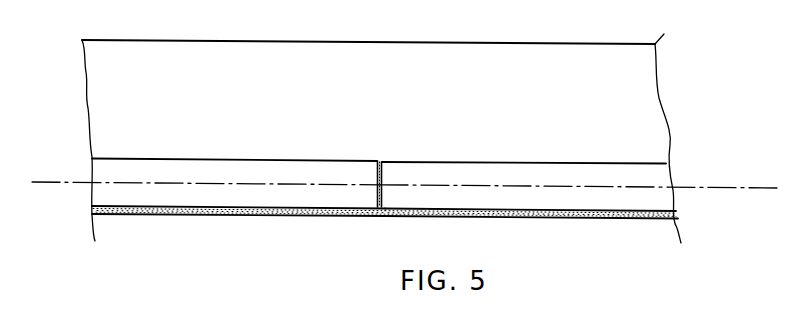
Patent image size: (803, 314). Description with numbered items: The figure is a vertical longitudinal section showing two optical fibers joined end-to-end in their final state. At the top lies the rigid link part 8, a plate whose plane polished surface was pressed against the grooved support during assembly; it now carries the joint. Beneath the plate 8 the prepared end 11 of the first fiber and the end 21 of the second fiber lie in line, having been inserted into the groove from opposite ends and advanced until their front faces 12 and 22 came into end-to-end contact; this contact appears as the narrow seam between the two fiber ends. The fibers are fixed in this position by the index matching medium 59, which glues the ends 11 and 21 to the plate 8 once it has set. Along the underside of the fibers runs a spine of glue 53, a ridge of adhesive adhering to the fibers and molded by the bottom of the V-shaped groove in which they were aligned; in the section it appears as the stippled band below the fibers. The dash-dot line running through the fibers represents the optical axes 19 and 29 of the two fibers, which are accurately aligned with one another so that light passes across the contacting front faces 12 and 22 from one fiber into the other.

The rigid link part 8 is at (580, 70).
The optical axis 19 is at (48, 182).
The optical axis 29 is at (722, 188).
The prepared end of optical fiber 11 is at (247, 210).
The end of optical fiber 21 is at (545, 213).
The front face 12 is at (376, 190).
The front face 22 is at (382, 172).
The spine of glue 53 is at (154, 216).
The index matching medium 59 is at (633, 218).